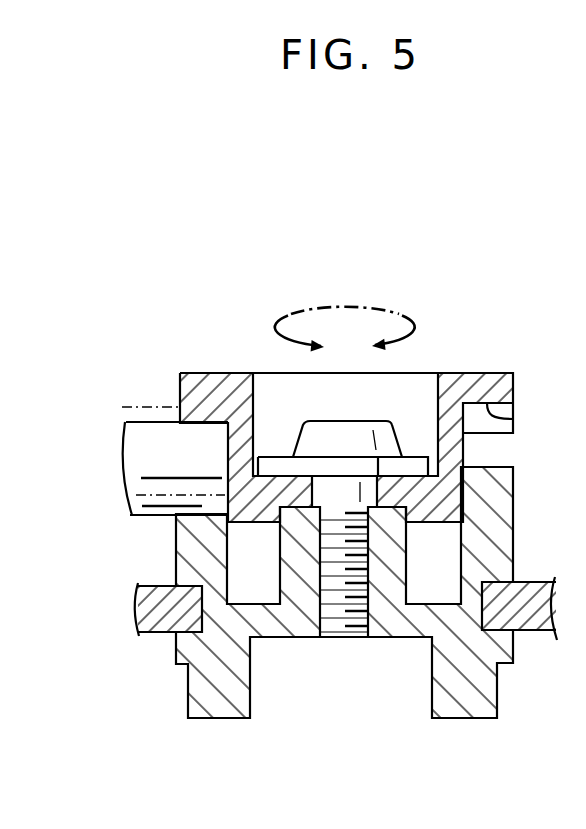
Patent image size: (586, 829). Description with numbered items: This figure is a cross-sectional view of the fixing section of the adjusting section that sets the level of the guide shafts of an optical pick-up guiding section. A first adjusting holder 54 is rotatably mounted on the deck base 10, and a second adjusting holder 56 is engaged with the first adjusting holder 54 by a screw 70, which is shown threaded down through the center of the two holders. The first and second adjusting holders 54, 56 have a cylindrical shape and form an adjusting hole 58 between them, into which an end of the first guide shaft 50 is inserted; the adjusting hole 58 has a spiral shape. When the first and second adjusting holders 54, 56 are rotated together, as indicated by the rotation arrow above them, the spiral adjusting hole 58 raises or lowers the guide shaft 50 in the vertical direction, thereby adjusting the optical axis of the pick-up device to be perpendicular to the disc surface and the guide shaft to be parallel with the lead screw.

The deck base 10 is at (157, 618).
The first guide shaft 50 is at (147, 452).
The first adjusting holder 54 is at (191, 549).
The second adjusting holder 56 is at (208, 386).
The adjusting hole 58 is at (513, 420).
The screw 70 is at (380, 418).